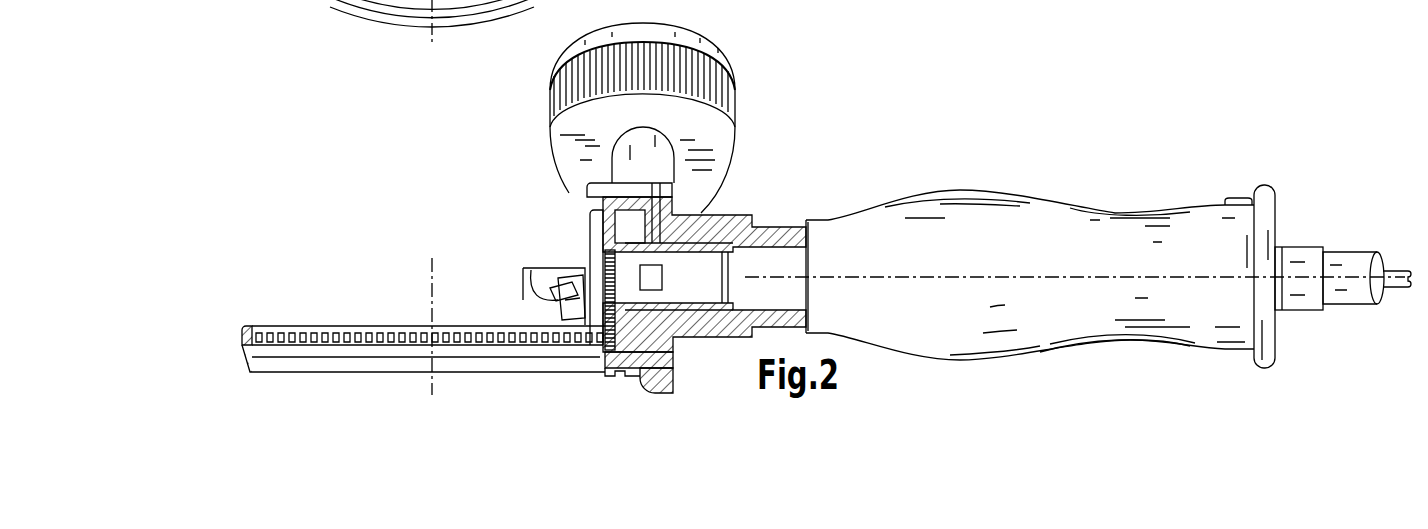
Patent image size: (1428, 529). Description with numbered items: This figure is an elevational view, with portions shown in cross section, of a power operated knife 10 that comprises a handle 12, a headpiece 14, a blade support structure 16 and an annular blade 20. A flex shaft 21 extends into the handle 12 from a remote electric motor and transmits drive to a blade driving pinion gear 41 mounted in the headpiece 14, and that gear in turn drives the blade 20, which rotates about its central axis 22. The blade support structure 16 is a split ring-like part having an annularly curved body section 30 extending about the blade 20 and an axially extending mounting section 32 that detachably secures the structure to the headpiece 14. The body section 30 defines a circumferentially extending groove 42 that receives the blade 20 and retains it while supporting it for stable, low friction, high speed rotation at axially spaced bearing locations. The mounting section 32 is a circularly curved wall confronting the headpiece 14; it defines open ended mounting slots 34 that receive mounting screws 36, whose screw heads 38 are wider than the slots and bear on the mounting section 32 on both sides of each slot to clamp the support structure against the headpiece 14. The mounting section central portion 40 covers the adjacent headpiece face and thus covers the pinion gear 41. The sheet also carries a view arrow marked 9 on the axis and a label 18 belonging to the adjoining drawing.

The section line 9 is at (432, 42).
The power operated knife 10 is at (361, 151).
The handle 12 is at (946, 187).
The headpiece 14 is at (719, 211).
The blade support structure 16 is at (326, 321).
The distal member 18 is at (328, 10).
The annular blade 20 is at (238, 360).
The flex shaft 21 is at (1302, 244).
The central axis 22 is at (430, 260).
The body section 30 is at (383, 321).
The mounting section 32 is at (581, 236).
The mounting slots 34 is at (580, 272).
The mounting screws 36 is at (555, 303).
The mounting screw heads 38 is at (556, 278).
The mounting section central portion 40 is at (586, 205).
The blade driving pinion gear 41 is at (633, 297).
The groove 42 is at (256, 324).